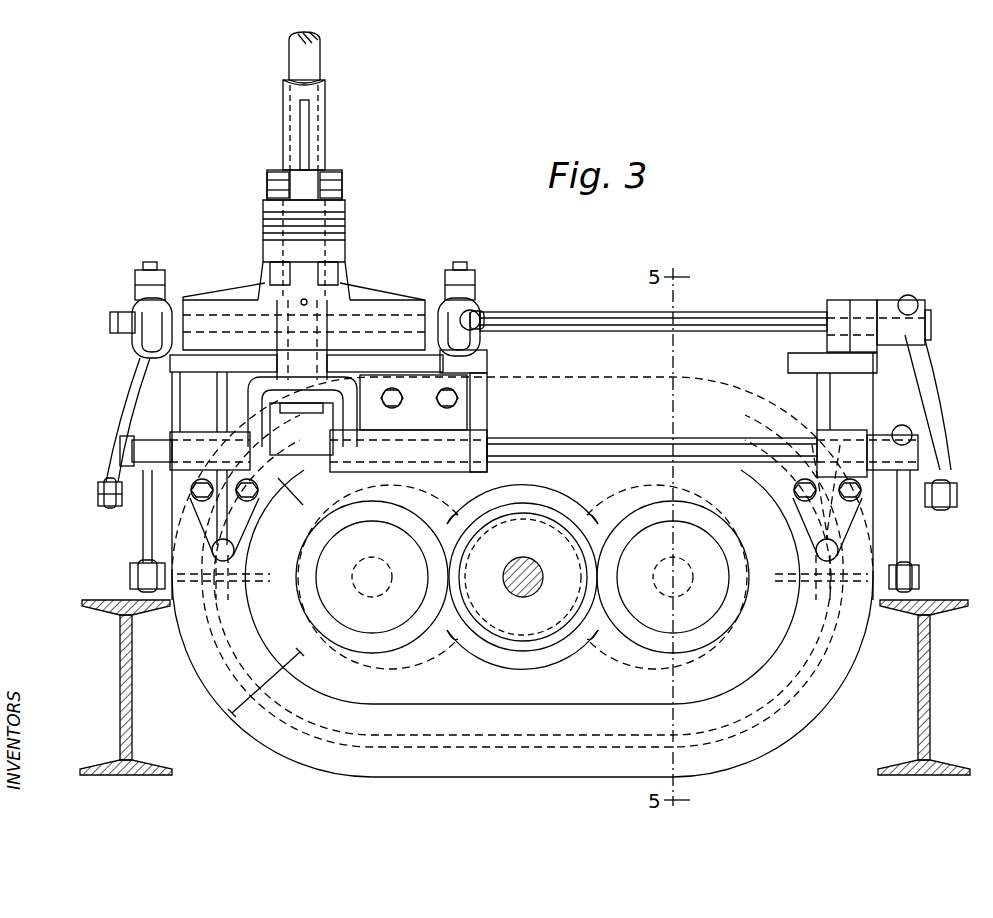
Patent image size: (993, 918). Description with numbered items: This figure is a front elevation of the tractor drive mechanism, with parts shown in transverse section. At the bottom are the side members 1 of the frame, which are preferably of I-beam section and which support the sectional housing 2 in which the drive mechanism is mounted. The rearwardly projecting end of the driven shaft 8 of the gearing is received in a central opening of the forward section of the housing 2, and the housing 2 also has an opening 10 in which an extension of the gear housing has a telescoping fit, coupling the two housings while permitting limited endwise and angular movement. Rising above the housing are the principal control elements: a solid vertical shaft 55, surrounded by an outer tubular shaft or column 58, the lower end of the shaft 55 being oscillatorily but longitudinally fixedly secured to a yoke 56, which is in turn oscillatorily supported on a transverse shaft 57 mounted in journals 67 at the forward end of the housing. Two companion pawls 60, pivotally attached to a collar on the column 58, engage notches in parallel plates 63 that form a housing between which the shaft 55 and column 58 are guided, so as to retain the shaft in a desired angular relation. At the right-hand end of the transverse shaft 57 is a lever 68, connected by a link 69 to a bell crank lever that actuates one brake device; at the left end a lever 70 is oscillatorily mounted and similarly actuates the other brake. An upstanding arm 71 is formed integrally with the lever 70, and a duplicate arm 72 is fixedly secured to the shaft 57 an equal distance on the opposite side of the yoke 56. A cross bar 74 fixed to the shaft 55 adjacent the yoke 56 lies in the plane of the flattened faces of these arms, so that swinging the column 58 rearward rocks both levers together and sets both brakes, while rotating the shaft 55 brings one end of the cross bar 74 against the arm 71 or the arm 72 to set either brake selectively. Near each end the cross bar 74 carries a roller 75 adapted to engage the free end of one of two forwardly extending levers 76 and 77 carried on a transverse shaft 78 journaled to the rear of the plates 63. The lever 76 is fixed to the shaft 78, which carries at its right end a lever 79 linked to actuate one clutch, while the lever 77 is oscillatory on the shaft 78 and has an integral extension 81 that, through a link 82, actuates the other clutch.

The side member 1 is at (120, 686).
The sectional housing 2 is at (406, 778).
The driven shaft 8 is at (516, 558).
The opening 10 is at (556, 512).
The vertical shaft 55 is at (320, 64).
The yoke 56 is at (258, 390).
The transverse shaft 57 is at (585, 438).
The tubular column 58 is at (325, 115).
The pawl 60 is at (267, 182).
The notched plate 63 is at (263, 238).
The journal 67 is at (197, 434).
The lever 68 is at (910, 540).
The link 69 is at (915, 576).
The lever 70 is at (146, 540).
The upstanding arm 71 is at (141, 412).
The arm 72 is at (487, 370).
The cross bar 74 is at (376, 302).
The roller 75 is at (162, 300).
The lever 76 is at (480, 313).
The lever 77 is at (132, 302).
The transverse shaft 78 is at (583, 312).
The lever 79 is at (925, 412).
The extension 81 is at (132, 462).
The link 82 is at (100, 500).